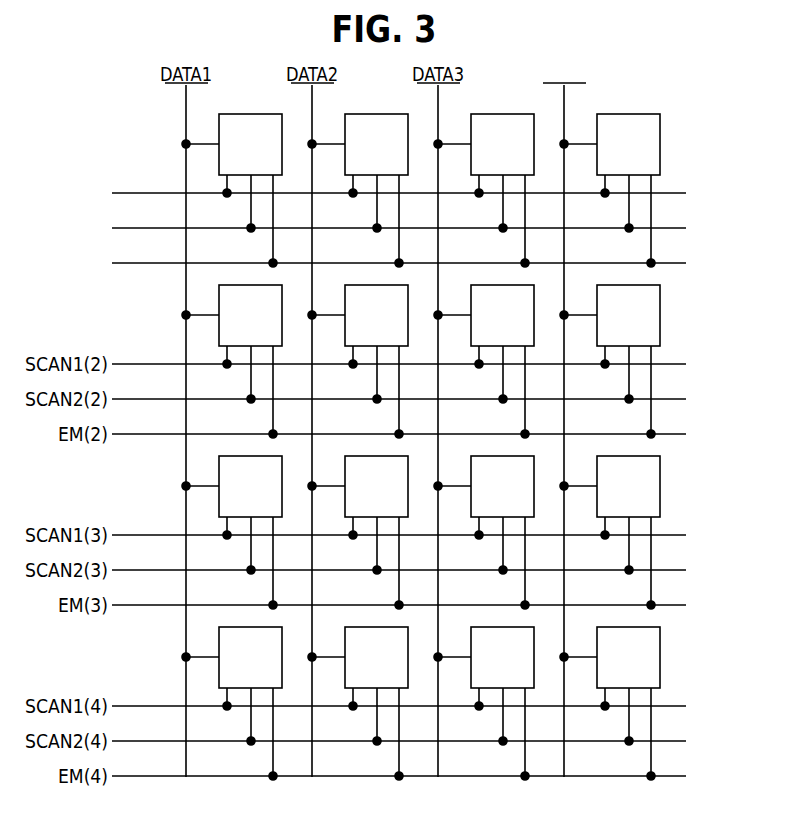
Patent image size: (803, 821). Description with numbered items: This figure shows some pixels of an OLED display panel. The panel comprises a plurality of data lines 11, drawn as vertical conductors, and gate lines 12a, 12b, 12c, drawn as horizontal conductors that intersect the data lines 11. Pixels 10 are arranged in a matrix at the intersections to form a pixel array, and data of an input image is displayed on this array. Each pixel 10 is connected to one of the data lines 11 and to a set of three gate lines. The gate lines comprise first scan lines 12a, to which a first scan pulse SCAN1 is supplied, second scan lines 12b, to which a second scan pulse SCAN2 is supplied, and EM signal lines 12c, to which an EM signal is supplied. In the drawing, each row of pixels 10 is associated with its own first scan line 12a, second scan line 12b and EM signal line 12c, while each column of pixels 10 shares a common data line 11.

The pixel 10 is at (660, 315).
The data line 11 is at (566, 89).
The first scan line 12a is at (672, 189).
The second scan line 12b is at (672, 224).
The EM signal line 12c is at (672, 259).